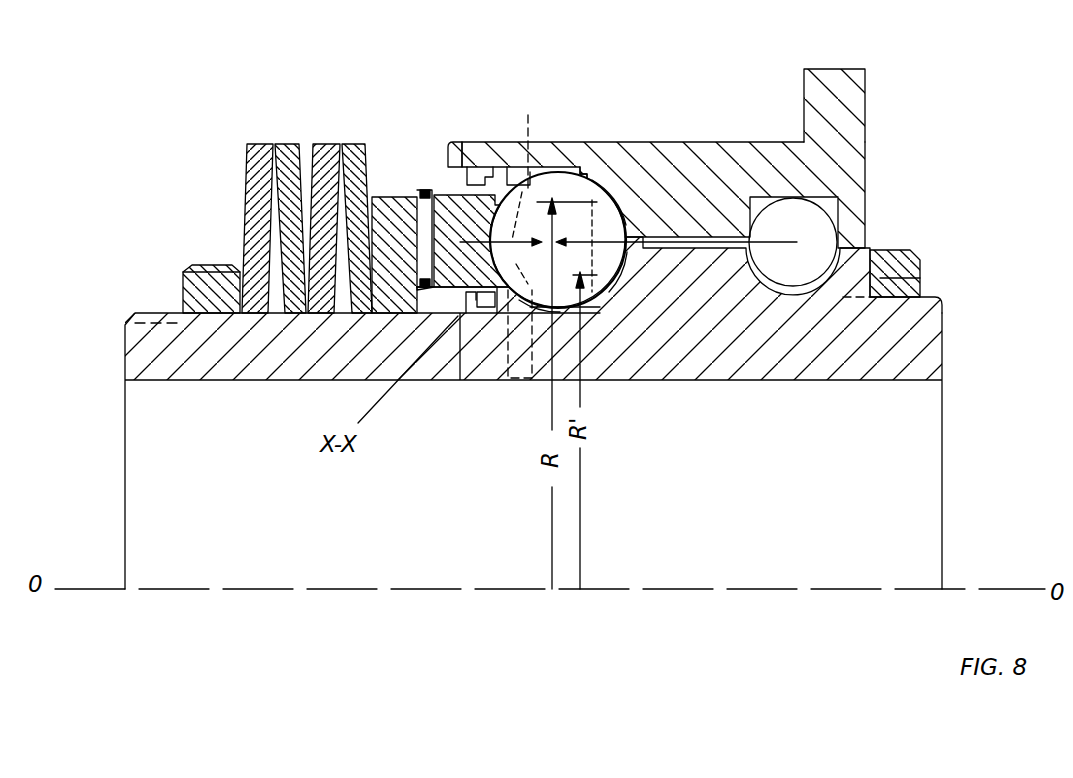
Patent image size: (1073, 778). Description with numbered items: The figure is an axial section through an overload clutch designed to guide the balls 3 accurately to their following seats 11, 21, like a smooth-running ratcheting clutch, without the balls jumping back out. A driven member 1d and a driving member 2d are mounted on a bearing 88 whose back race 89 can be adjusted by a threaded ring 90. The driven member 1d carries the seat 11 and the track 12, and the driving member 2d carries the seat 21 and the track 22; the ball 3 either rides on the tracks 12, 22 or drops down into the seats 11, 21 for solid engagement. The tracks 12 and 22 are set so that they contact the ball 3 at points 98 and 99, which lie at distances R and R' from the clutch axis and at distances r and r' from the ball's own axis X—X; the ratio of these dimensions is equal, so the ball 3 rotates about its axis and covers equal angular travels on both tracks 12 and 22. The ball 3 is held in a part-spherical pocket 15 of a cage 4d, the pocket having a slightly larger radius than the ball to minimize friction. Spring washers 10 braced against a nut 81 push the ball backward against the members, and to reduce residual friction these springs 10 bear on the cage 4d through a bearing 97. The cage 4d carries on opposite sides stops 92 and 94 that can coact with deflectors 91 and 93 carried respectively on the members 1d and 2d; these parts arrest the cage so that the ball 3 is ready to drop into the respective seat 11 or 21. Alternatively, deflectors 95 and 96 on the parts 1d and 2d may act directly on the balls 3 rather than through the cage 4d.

The driven member 1d is at (808, 155).
The driving member 2d is at (900, 358).
The ball 3 is at (571, 185).
The cage 4d is at (440, 195).
The spring washers 10 is at (308, 207).
The seat 11 is at (680, 160).
The track 12 is at (660, 268).
The pocket 15 is at (524, 137).
The seat 21 is at (613, 173).
The track 22 is at (588, 292).
The nut 81 is at (210, 287).
The bearing 88 is at (796, 241).
The back race 89 is at (897, 250).
The threaded ring 90 is at (903, 278).
The deflector 91 is at (470, 190).
The stop 92 is at (478, 177).
The deflector 93 is at (468, 300).
The stop 94 is at (488, 305).
The deflector 95 is at (543, 145).
The deflector 96 is at (525, 382).
The bearing 97 is at (466, 305).
The contact point 98 is at (600, 178).
The contact point 99 is at (636, 292).